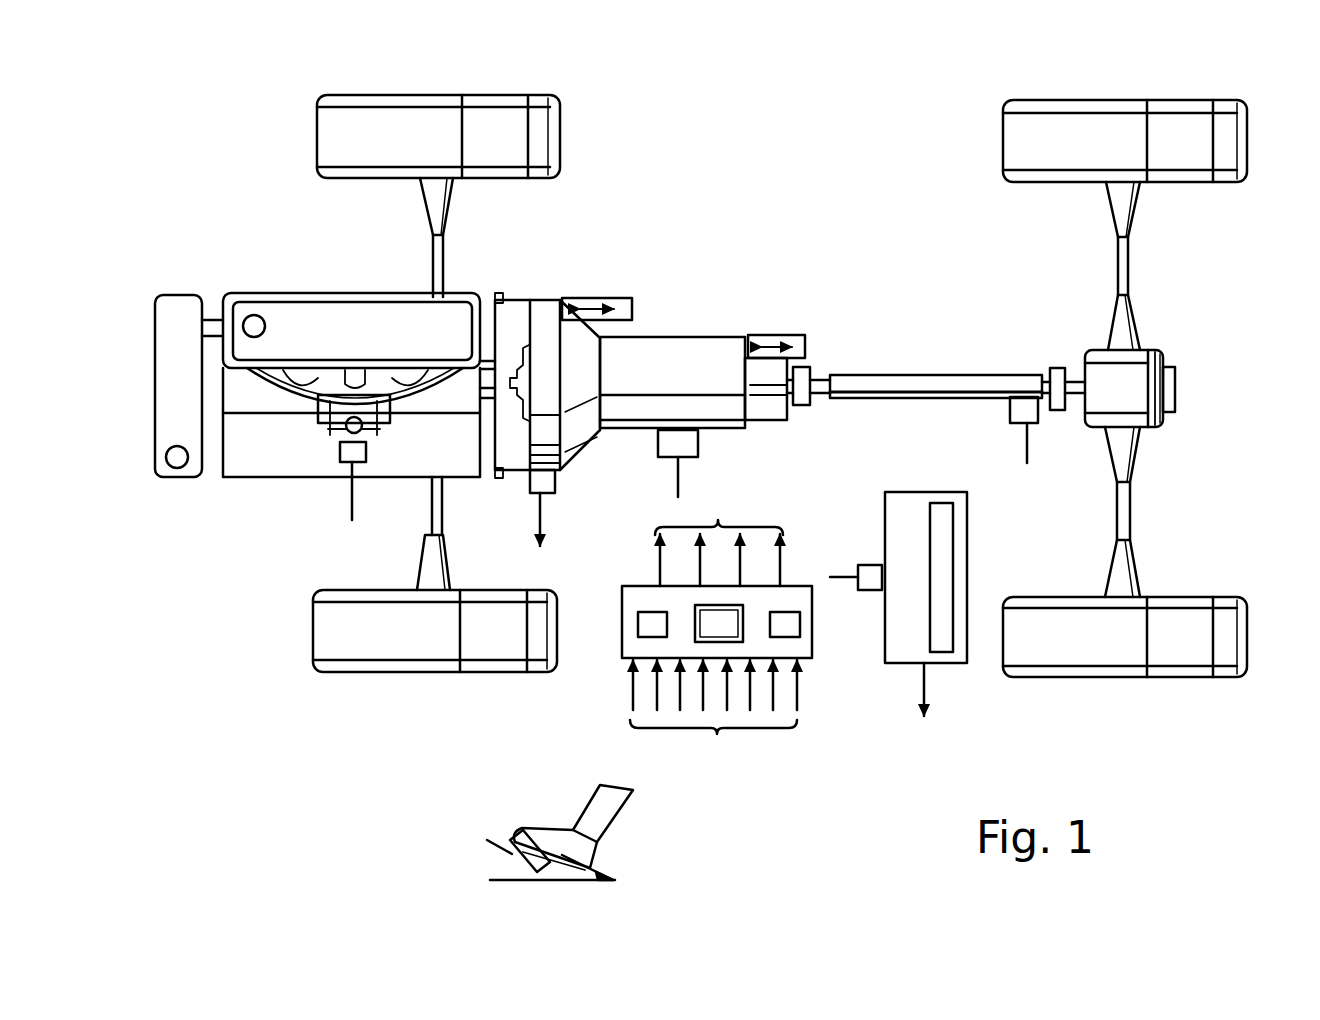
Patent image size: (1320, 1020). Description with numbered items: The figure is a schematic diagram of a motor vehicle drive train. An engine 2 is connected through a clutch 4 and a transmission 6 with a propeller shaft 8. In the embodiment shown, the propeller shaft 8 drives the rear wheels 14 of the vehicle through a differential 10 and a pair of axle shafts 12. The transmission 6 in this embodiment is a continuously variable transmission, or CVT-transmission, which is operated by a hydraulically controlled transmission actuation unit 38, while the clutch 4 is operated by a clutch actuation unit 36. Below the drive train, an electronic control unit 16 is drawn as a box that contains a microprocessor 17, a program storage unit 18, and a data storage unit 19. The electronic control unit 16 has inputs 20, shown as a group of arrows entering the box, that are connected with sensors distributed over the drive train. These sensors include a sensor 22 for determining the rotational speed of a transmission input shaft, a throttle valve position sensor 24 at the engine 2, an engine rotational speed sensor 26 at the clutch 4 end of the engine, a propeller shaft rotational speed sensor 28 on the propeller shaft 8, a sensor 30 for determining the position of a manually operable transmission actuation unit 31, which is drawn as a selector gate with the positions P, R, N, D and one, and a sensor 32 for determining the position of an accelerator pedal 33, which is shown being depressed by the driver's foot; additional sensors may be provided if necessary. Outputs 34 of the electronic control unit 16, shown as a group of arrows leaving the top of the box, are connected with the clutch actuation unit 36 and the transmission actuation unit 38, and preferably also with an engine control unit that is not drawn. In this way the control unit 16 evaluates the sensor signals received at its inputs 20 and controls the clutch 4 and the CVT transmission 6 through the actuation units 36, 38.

The engine 2 is at (288, 318).
The clutch 4 is at (550, 302).
The transmission 6 is at (668, 388).
The propeller shaft 8 is at (947, 376).
The differential 10 is at (1110, 400).
The axle shafts 12 is at (1128, 512).
The rear wheels 14 is at (1109, 156).
The electronic control unit 16 is at (606, 617).
The microprocessor 17 is at (706, 637).
The program storage unit 18 is at (646, 622).
The data storage unit 19 is at (790, 622).
The inputs 20 is at (713, 716).
The sensor for determining the rotational speed of a transmission input shaft 22 is at (690, 443).
The throttle valve position sensor 24 is at (350, 452).
The engine rotational speed sensor 26 is at (542, 478).
The propeller shaft rotational speed sensor 28 is at (1020, 411).
The sensor for determining the position of a manually operable transmission actuatio 30 is at (872, 566).
The manually operable transmission actuation unit 31 is at (953, 523).
The sensor for determining the position of an accelerator pedal 32 is at (512, 864).
The accelerator pedal 33 is at (548, 836).
The outputs 34 is at (719, 539).
The clutch actuation unit 36 is at (622, 299).
The transmission actuation unit 38 is at (775, 336).